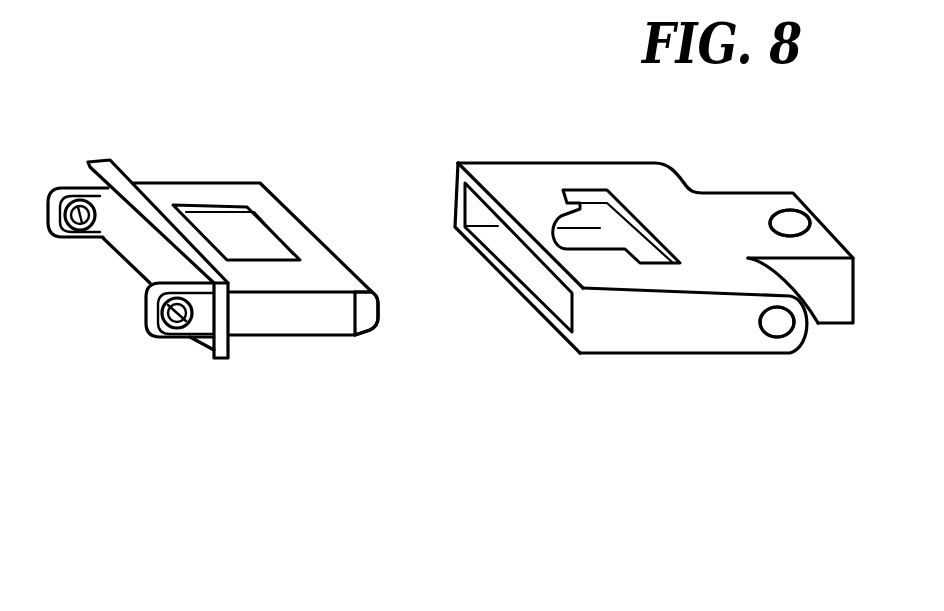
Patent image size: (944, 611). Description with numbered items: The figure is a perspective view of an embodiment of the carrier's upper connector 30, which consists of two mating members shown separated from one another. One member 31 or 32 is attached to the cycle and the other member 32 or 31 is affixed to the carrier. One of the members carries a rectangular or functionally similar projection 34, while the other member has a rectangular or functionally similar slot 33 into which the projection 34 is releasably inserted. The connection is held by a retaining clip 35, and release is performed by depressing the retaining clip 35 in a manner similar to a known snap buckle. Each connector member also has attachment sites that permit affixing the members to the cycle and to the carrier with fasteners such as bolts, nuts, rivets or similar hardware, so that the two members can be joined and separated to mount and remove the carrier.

The upper connector 30 is at (442, 400).
The mating member 31 is at (273, 318).
The mating member 32 is at (668, 327).
The slot 33 is at (540, 287).
The projection 34 is at (340, 313).
The retaining clip 35 is at (212, 237).